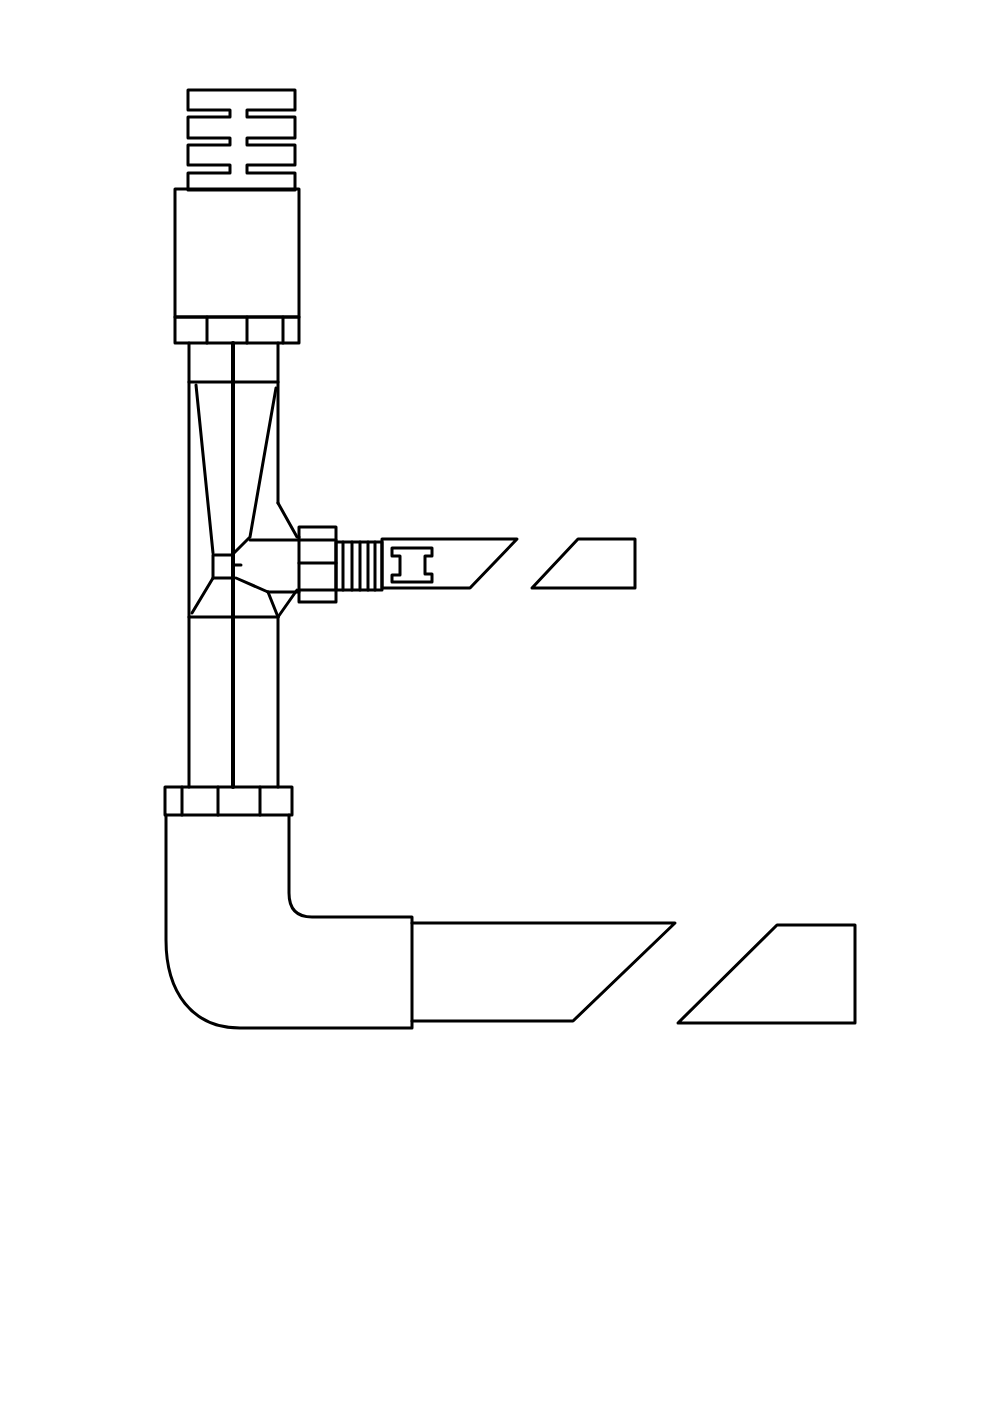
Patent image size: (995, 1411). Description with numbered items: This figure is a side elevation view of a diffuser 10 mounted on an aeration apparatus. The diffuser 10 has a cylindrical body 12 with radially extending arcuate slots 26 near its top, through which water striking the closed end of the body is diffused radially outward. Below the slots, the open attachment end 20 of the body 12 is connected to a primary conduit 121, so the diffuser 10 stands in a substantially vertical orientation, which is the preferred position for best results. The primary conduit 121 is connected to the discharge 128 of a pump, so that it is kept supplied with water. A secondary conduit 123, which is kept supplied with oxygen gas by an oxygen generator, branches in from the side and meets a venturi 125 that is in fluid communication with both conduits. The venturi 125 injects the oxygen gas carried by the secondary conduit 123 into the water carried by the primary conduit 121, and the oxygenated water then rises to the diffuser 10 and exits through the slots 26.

The diffuser 10 is at (243, 88).
The cylindrical body 12 is at (295, 98).
The slots 26 is at (295, 142).
The open attachment end 20 is at (205, 183).
The primary conduit 121 is at (189, 713).
The discharge 128 is at (189, 637).
The venturi 125 is at (278, 717).
The secondary conduit 123 is at (425, 538).